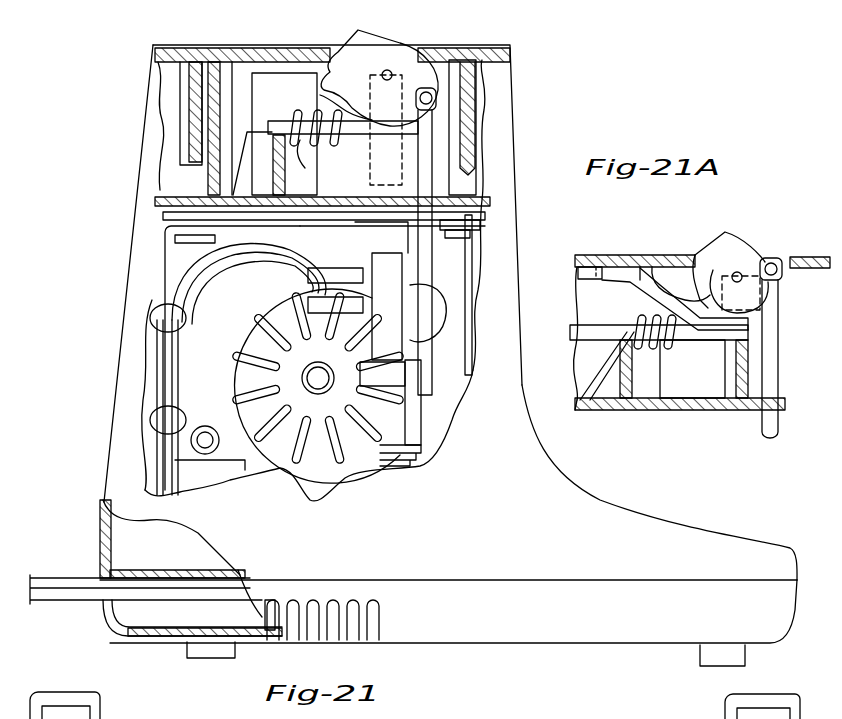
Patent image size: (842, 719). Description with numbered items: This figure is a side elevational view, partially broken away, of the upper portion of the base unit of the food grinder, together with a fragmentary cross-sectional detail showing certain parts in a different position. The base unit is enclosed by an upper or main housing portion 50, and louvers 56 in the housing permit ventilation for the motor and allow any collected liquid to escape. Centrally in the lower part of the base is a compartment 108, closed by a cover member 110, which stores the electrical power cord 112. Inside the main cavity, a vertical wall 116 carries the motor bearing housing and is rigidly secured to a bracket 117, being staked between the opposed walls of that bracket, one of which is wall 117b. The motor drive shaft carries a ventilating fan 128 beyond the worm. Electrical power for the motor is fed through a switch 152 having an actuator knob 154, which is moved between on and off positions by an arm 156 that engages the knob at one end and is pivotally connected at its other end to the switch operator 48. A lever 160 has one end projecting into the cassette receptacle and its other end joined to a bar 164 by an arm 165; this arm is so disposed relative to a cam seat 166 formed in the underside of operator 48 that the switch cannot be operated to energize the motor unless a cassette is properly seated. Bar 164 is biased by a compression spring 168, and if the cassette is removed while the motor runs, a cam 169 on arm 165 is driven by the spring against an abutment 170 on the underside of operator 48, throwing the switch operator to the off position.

In FIG. 21, the switch operator 48 is at (378, 56).
In FIG. 21A, the switch operator 48 is at (740, 254).
In FIG. 21, the upper or main housing portion 50 is at (540, 498).
In FIG. 21, the louvers 56 is at (378, 632).
In FIG. 21, the compartment 108 is at (125, 612).
In FIG. 21, the cover member 110 is at (193, 572).
In FIG. 21, the electrical power cord 112 is at (52, 578).
In FIG. 21, the vertical wall 116 is at (232, 294).
In FIG. 21, the bracket 117 is at (285, 214).
In FIG. 21, the opposed wall of bracket 117b is at (168, 236).
In FIG. 21, the ventilating fan 128 is at (320, 478).
In FIG. 21, the switch 152 is at (390, 349).
In FIG. 21, the actuator knob 154 is at (440, 298).
In FIG. 21, the arm 156 is at (425, 250).
In FIG. 21A, the arm 156 is at (770, 430).
In FIG. 21A, the lever 160 is at (642, 288).
In FIG. 21, the bar 164 is at (364, 134).
In FIG. 21A, the bar 164 is at (674, 336).
In FIG. 21A, the arm 165 is at (572, 404).
In FIG. 21, the cam seat 166 is at (334, 110).
In FIG. 21A, the cam seat 166 is at (714, 308).
In FIG. 21, the compression spring 168 is at (302, 145).
In FIG. 21A, the compression spring 168 is at (641, 346).
In FIG. 21A, the cam 169 is at (643, 265).
In FIG. 21A, the abutment 170 is at (700, 262).